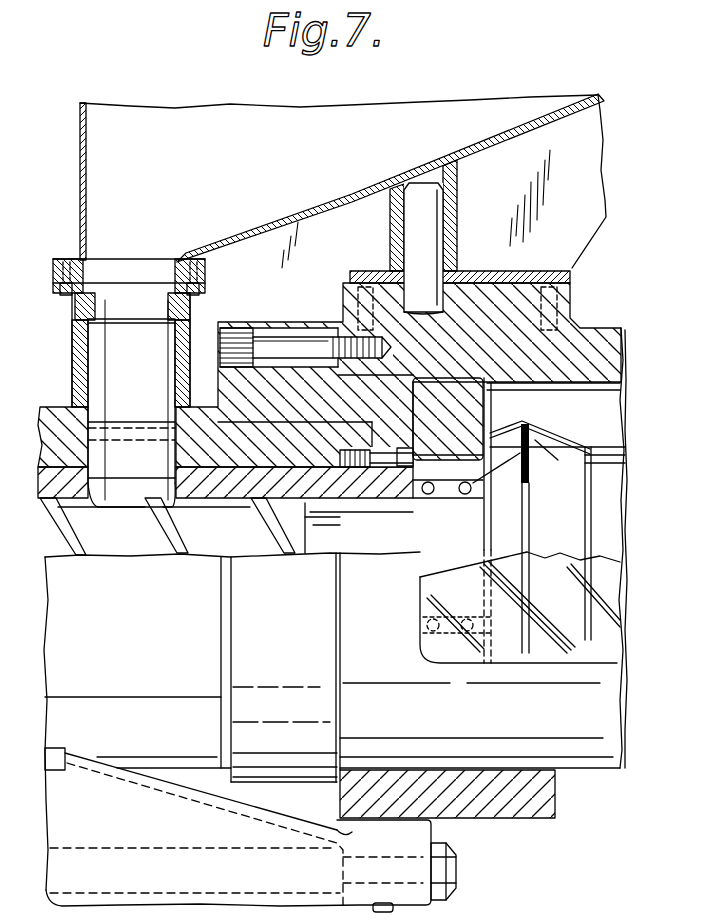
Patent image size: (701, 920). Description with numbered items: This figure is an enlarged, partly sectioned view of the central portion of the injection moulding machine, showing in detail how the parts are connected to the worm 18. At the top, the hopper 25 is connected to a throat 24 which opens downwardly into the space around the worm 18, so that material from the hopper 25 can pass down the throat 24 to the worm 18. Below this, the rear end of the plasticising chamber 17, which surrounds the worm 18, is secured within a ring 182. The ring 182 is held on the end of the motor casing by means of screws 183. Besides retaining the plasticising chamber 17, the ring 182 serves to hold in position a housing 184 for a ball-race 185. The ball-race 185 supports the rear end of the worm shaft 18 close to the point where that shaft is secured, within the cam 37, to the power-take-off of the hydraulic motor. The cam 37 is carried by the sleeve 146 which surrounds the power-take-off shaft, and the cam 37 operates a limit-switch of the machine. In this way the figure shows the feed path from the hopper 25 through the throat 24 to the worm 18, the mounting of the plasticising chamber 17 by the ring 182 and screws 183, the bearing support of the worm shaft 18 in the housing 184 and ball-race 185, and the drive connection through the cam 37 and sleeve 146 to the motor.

The plasticising chamber 17 is at (343, 497).
The worm 18 is at (243, 533).
The throat 24 is at (188, 332).
The hopper 25 is at (205, 137).
The cam 37 is at (553, 545).
The sleeve 146 is at (605, 457).
The ring 182 is at (283, 747).
The screws 183 is at (308, 343).
The housing 184 is at (468, 392).
The ball-race 185 is at (530, 427).